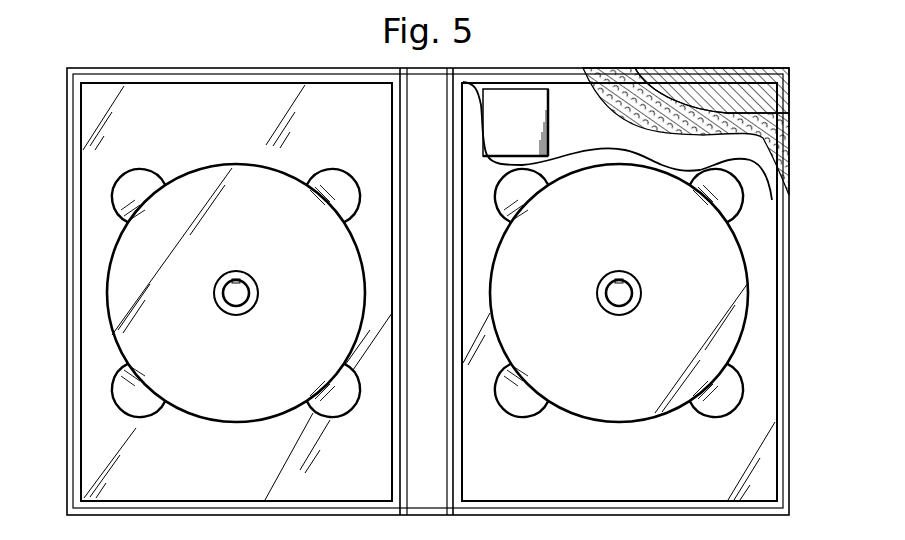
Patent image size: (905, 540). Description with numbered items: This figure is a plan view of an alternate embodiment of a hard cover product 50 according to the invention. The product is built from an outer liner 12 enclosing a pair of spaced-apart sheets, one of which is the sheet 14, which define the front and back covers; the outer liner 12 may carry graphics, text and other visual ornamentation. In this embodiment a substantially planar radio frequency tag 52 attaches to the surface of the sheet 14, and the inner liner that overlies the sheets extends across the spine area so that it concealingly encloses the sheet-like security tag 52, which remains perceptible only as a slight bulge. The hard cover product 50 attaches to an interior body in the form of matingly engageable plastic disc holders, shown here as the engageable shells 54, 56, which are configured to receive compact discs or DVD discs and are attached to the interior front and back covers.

The outer liner 12 is at (740, 93).
The sheet 14 is at (648, 82).
The hard cover product 50 is at (135, 68).
The radio frequency tag 52 is at (512, 105).
The engageable shell 54 is at (760, 360).
The engageable shell 56 is at (92, 345).